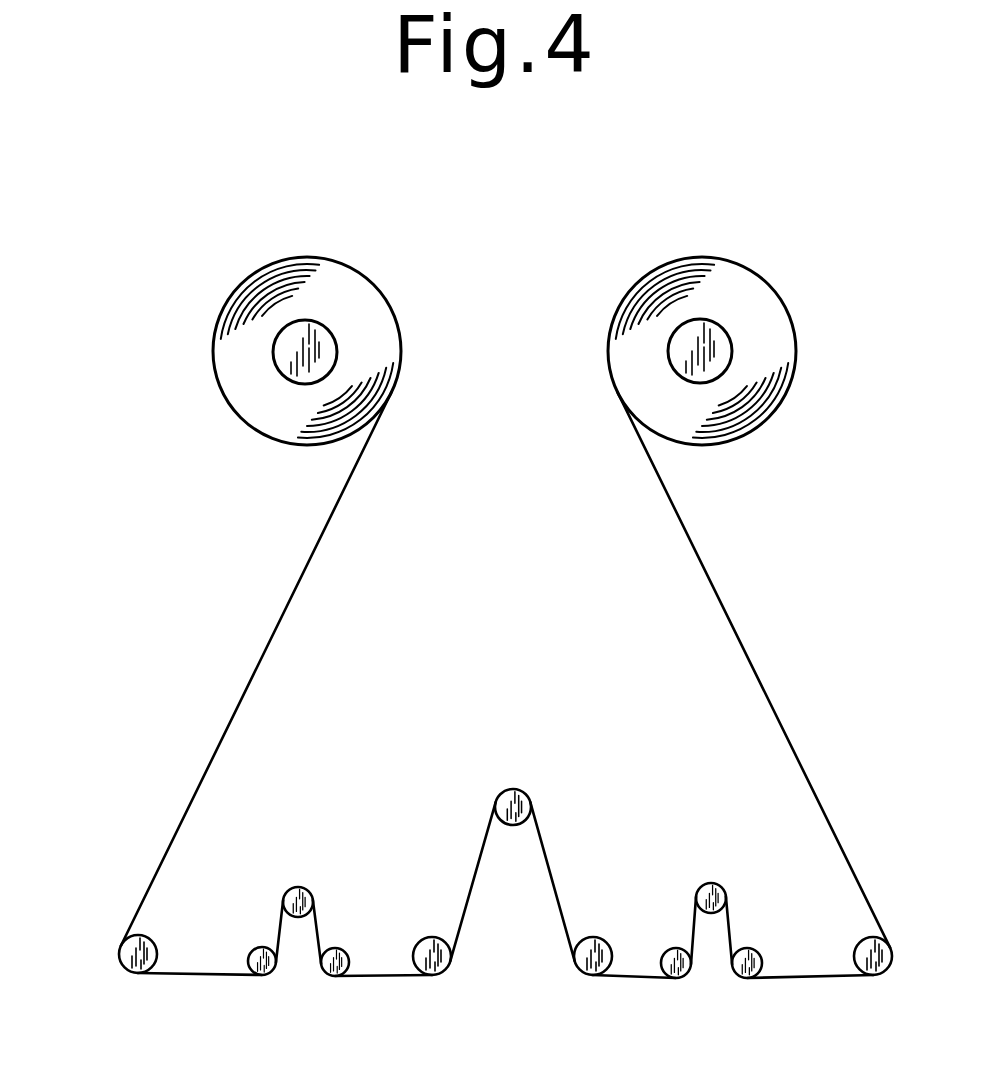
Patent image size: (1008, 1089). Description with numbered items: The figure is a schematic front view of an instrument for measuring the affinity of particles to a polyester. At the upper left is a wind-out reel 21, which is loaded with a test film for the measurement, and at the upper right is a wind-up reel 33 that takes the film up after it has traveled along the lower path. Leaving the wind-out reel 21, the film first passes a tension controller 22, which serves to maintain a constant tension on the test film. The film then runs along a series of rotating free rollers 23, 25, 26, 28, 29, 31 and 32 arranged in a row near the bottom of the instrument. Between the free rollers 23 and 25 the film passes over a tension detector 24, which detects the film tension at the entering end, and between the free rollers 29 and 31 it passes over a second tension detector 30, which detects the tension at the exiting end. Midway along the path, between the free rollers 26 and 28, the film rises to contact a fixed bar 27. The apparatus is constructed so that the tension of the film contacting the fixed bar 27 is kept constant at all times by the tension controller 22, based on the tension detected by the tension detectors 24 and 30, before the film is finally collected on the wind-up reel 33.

The wind-out reel 21 is at (274, 358).
The tension controller 22 is at (124, 940).
The rotating free roller 23 is at (268, 976).
The tension detector 24 is at (296, 886).
The rotating free roller 25 is at (330, 978).
The rotating free roller 26 is at (432, 976).
The fixed bar 27 is at (515, 789).
The rotating free roller 28 is at (590, 976).
The rotating free roller 29 is at (680, 979).
The tension detector 30 is at (704, 884).
The rotating free roller 31 is at (750, 979).
The rotating free roller 32 is at (858, 942).
The wind-up reel 33 is at (733, 350).